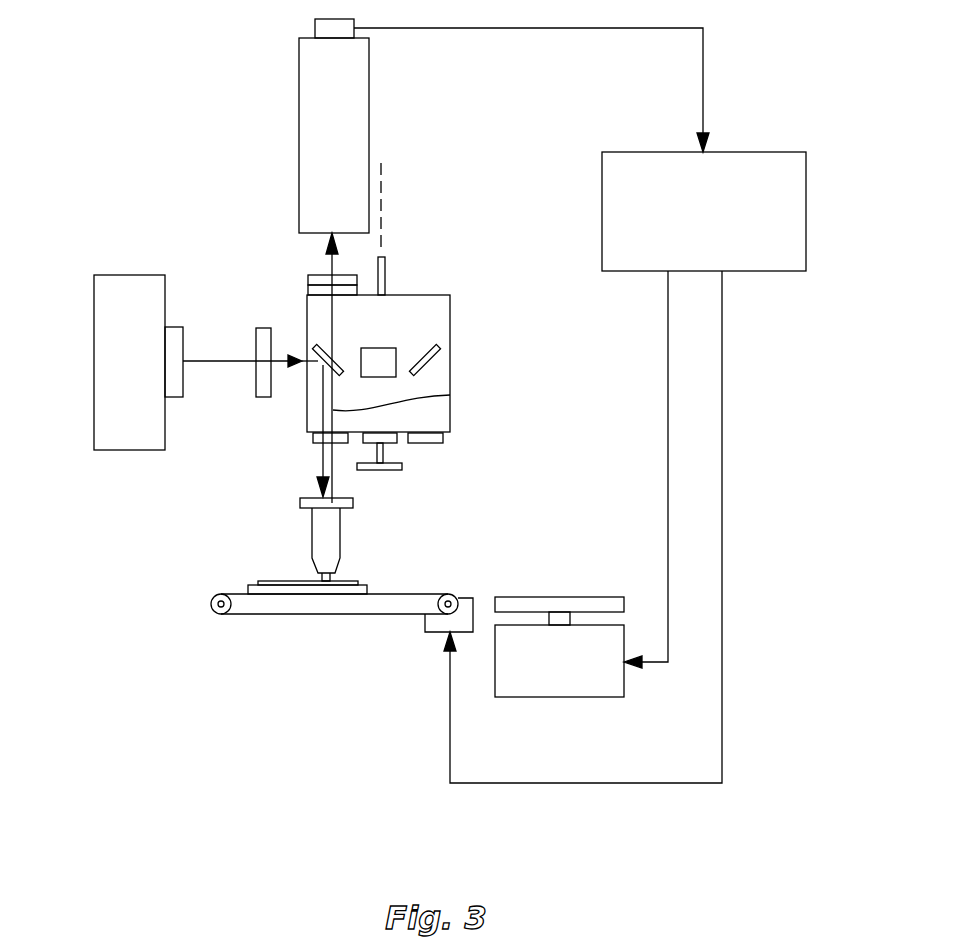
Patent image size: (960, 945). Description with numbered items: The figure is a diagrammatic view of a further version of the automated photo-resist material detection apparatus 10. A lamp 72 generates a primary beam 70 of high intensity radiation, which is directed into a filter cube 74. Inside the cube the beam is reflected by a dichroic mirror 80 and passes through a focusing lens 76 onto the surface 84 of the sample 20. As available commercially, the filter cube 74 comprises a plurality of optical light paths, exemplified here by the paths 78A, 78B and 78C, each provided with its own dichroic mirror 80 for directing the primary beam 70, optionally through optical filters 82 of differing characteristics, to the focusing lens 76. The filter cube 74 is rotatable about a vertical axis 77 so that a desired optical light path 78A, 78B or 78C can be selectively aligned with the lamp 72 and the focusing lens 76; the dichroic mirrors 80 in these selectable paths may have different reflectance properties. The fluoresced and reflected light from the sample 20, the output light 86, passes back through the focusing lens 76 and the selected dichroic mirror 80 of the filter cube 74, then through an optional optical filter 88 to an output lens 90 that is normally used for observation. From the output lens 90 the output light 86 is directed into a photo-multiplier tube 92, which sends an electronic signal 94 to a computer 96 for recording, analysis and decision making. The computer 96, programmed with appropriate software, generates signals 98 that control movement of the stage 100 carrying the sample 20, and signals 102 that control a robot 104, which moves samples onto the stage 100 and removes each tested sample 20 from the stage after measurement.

The photo-resist material detection apparatus 10 is at (124, 104).
The sample 20 is at (262, 583).
The primary beam 70 is at (220, 361).
The lamp 72 is at (94, 328).
The filter cube 74 is at (443, 313).
The focusing lens 76 is at (320, 535).
The vertical axis 77 is at (385, 220).
The optical light path 78A is at (338, 443).
The optical light path 78B is at (397, 443).
The optical light path 78C is at (443, 440).
The dichroic mirror 80 is at (318, 350).
The optical filter 82 is at (260, 397).
The surface 84 is at (362, 582).
The output light 86 is at (450, 395).
The optical filter 88 is at (308, 289).
The output lens 90 is at (308, 279).
The photo-multiplier tube 92 is at (298, 60).
The electronic signal 94 is at (703, 92).
The computer 96 is at (806, 205).
The signals 98 is at (722, 430).
The stage 100 is at (262, 612).
The signals 102 is at (668, 363).
The robot 104 is at (580, 697).